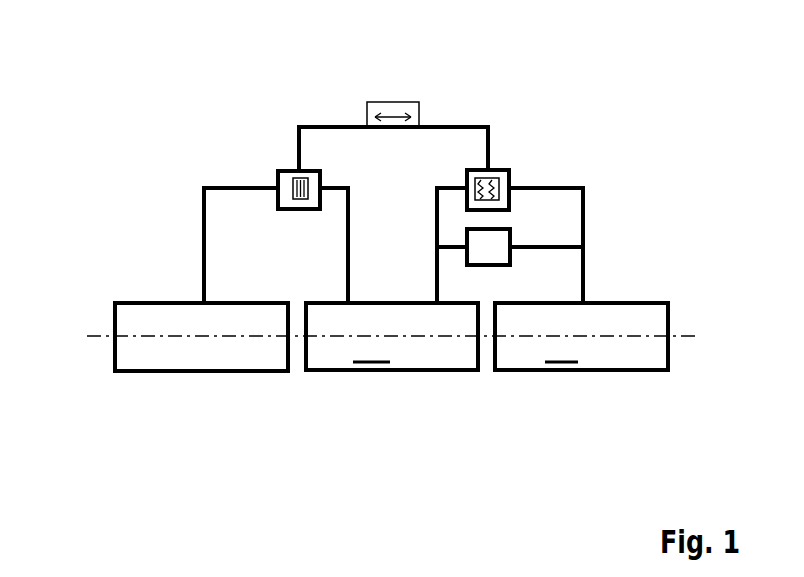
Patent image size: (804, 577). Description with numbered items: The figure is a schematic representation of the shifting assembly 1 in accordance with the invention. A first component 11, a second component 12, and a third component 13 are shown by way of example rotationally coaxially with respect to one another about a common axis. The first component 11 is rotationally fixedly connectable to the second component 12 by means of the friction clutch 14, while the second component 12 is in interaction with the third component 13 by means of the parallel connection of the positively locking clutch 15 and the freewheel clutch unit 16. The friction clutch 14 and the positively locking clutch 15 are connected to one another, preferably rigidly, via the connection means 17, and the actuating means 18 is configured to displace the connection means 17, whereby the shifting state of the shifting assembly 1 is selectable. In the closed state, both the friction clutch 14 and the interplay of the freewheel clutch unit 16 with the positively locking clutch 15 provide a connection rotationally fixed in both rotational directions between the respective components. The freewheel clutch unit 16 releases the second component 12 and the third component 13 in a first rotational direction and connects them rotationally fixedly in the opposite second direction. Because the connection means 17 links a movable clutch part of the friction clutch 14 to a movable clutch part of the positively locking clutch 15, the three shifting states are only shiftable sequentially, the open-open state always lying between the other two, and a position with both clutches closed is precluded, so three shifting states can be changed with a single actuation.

The shifting assembly 1 is at (147, 117).
The first component 11 is at (164, 358).
The second component 12 is at (355, 352).
The third component 13 is at (545, 343).
The friction clutch 14 is at (288, 178).
The positively locking clutch 15 is at (500, 177).
The freewheel clutch unit 16 is at (498, 238).
The connection means 17 is at (447, 126).
The actuating means 18 is at (393, 108).